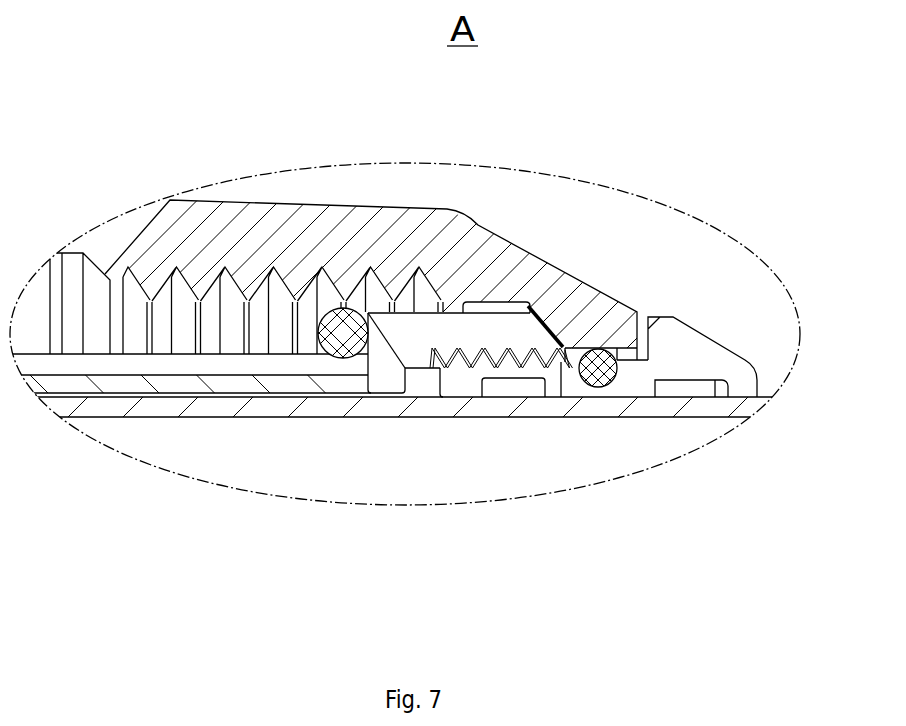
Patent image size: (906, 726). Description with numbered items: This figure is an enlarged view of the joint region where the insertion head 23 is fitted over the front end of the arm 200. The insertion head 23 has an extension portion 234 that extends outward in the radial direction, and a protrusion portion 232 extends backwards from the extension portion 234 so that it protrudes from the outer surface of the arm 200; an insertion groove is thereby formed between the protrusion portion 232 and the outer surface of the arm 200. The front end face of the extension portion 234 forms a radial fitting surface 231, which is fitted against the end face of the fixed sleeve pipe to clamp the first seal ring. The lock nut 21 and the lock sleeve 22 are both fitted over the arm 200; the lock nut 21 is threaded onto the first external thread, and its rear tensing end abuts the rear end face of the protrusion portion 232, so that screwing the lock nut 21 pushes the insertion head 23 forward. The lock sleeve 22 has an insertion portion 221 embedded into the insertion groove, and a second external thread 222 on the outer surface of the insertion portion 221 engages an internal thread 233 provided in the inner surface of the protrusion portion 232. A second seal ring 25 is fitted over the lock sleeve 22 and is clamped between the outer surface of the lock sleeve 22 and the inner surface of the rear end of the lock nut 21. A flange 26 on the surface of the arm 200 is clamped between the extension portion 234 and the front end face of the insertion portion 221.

The lock nut 21 is at (288, 217).
The lock sleeve 22 is at (663, 347).
The insertion head 23 is at (275, 380).
The second seal ring 25 is at (602, 390).
The flange 26 is at (418, 380).
The arm 200 is at (378, 420).
The insertion portion 221 is at (528, 376).
The second external thread 222 is at (552, 368).
The fitting surface 231 is at (333, 383).
The protrusion portion 232 is at (455, 330).
The internal thread 233 is at (530, 302).
The extension portion 234 is at (380, 357).